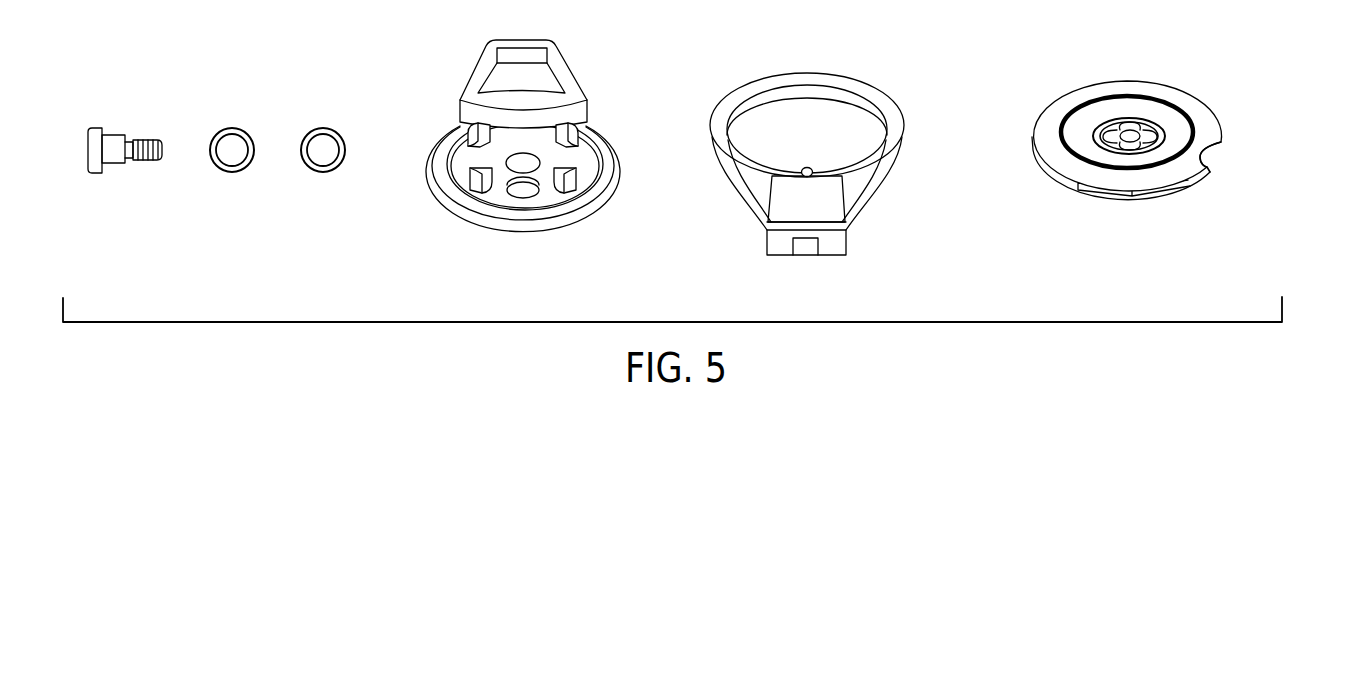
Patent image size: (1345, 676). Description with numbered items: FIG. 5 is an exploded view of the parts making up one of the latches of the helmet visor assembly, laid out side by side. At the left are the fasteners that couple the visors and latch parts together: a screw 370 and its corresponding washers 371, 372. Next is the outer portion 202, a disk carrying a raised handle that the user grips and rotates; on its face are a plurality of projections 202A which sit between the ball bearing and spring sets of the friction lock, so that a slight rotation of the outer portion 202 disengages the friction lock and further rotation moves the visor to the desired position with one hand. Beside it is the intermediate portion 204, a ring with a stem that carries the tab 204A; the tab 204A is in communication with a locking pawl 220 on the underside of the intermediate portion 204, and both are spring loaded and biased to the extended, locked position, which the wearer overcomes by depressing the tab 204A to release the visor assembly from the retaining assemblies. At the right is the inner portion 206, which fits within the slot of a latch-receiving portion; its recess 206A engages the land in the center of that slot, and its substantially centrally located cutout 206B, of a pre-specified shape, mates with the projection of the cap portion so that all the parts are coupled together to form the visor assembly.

The screw 370 is at (121, 127).
The washer 371 is at (226, 120).
The washer 372 is at (318, 120).
The outer portion 202 is at (586, 74).
The projection 202A is at (463, 128).
The intermediate portion 204 is at (880, 74).
The tab 204A is at (806, 256).
The locking pawl 220 is at (812, 172).
The inner portion 206 is at (1097, 208).
The recess 206A is at (1219, 153).
The cutout 206B is at (1137, 122).